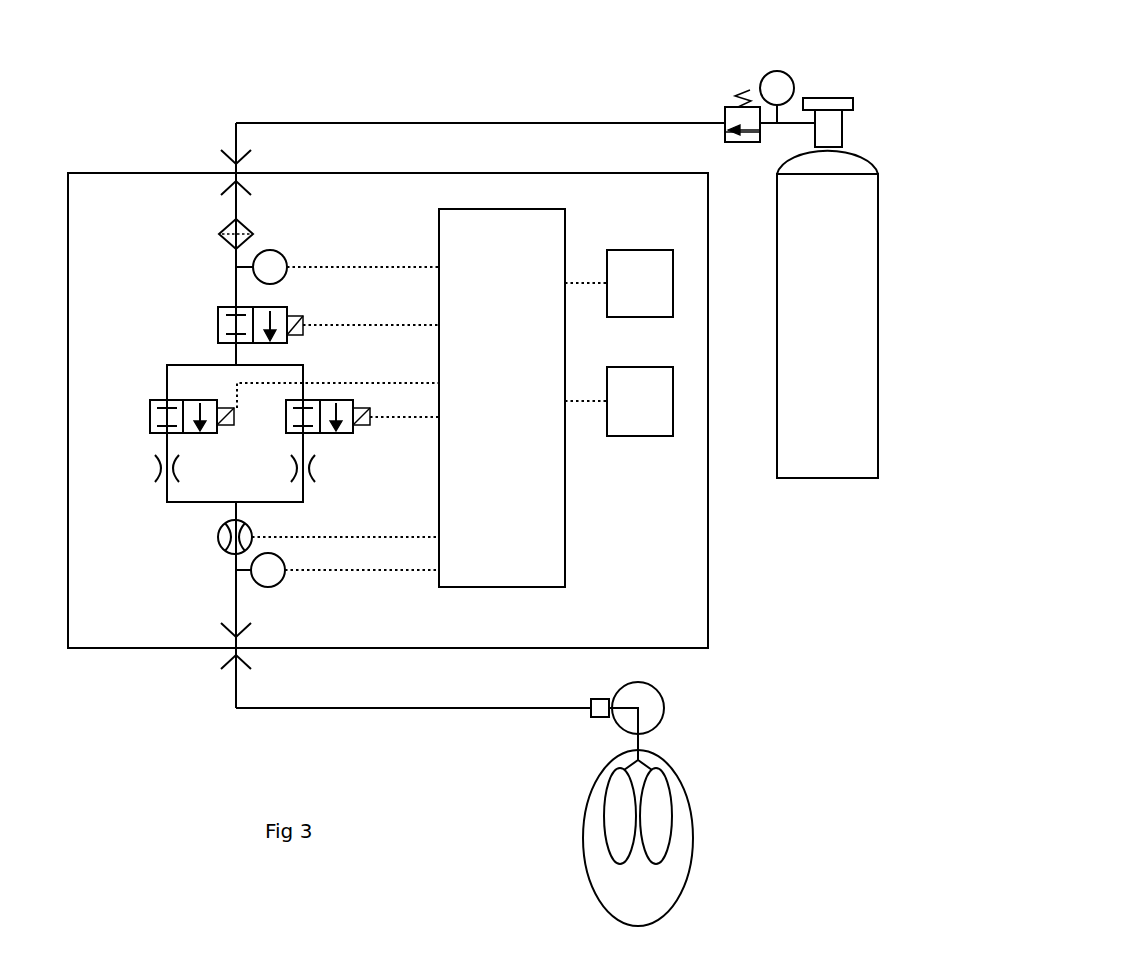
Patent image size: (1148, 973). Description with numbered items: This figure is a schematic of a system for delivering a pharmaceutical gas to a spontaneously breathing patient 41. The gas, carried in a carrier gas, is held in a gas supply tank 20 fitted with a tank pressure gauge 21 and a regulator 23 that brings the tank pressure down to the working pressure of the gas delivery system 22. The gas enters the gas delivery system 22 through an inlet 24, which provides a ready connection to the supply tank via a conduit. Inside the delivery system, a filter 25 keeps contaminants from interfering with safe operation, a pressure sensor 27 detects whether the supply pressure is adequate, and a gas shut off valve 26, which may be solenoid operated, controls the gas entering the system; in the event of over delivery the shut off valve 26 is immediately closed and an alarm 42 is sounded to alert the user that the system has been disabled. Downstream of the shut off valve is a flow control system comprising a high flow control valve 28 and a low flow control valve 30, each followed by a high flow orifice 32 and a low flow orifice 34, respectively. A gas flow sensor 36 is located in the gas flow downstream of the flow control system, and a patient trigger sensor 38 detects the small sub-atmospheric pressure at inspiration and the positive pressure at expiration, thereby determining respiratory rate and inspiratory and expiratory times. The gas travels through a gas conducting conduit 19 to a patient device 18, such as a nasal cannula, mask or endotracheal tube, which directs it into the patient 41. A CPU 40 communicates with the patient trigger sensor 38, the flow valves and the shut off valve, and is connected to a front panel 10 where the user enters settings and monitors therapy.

The front panel 10 is at (621, 368).
The patient device 18 is at (590, 718).
The gas conducting conduit 19 is at (383, 708).
The gas supply tank 20 is at (878, 231).
The tank pressure gauge 21 is at (792, 78).
The gas delivery system 22 is at (708, 595).
The regulator 23 is at (725, 110).
The inlet 24 is at (231, 158).
The filter 25 is at (228, 223).
The gas shut off valve 26 is at (218, 314).
The pressure sensor 27 is at (272, 249).
The high flow control valve 28 is at (155, 398).
The low flow control valve 30 is at (352, 434).
The high flow orifice 32 is at (162, 467).
The low flow orifice 34 is at (313, 468).
The gas flow sensor 36 is at (220, 533).
The patient trigger sensor 38 is at (287, 585).
The CPU 40 is at (565, 582).
The patient 41 is at (664, 688).
The alarm 42 is at (637, 250).